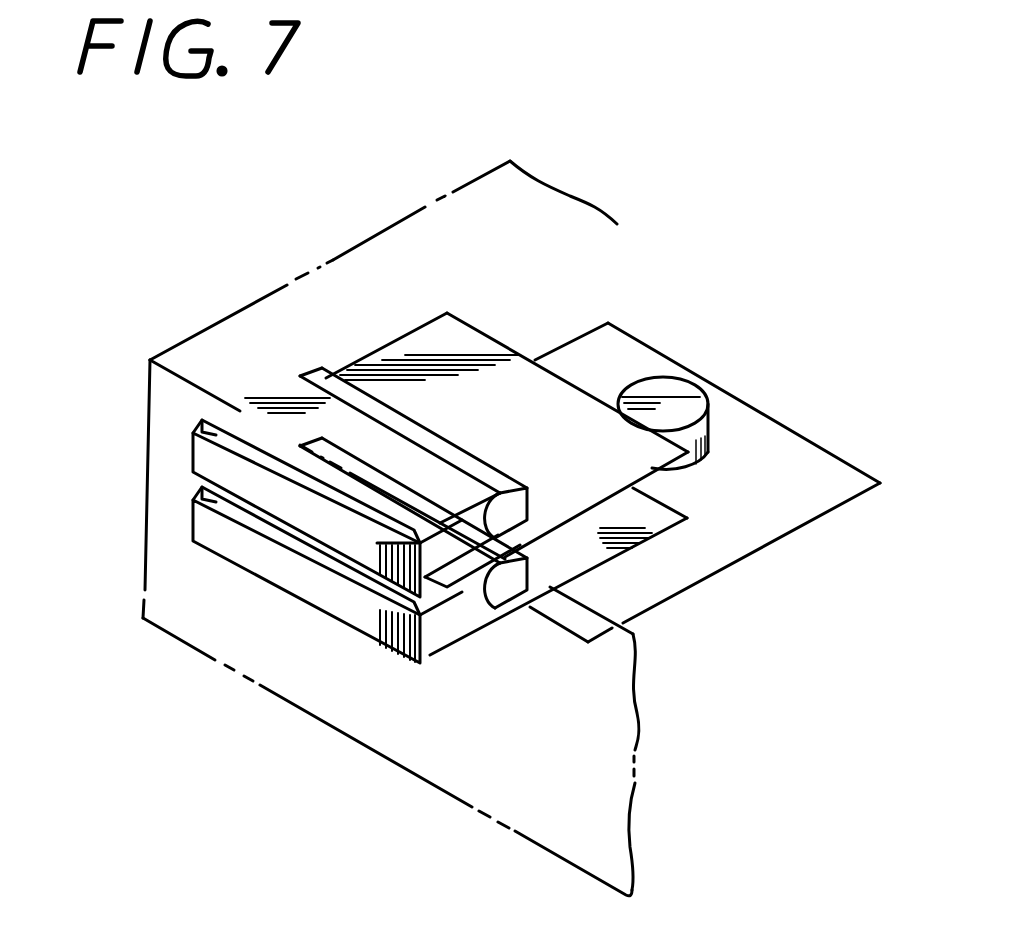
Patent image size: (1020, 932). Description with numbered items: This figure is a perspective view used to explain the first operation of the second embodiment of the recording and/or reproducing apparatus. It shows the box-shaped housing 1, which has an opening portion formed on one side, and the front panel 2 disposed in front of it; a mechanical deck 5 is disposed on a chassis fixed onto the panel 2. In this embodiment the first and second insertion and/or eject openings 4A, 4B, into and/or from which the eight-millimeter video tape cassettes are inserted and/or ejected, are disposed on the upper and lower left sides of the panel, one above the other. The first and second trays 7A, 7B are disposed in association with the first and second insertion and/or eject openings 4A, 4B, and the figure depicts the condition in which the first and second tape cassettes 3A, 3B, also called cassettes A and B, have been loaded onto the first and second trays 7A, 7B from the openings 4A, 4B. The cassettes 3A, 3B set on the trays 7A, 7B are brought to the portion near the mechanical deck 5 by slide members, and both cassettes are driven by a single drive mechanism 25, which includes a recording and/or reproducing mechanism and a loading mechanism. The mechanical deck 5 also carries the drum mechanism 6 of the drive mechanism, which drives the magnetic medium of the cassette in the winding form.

The housing 1 is at (540, 207).
The front panel 2 is at (288, 680).
The first tape cassette 3A is at (237, 550).
The second tape cassette 3B is at (283, 382).
The first insertion and/or eject opening 4A is at (232, 513).
The second insertion and/or eject opening 4B is at (205, 428).
The mechanical deck 5 is at (709, 482).
The drive mechanism 25 is at (760, 438).
The drum mechanism 6 is at (663, 385).
The first tray 7A is at (488, 618).
The second tray 7B is at (455, 337).